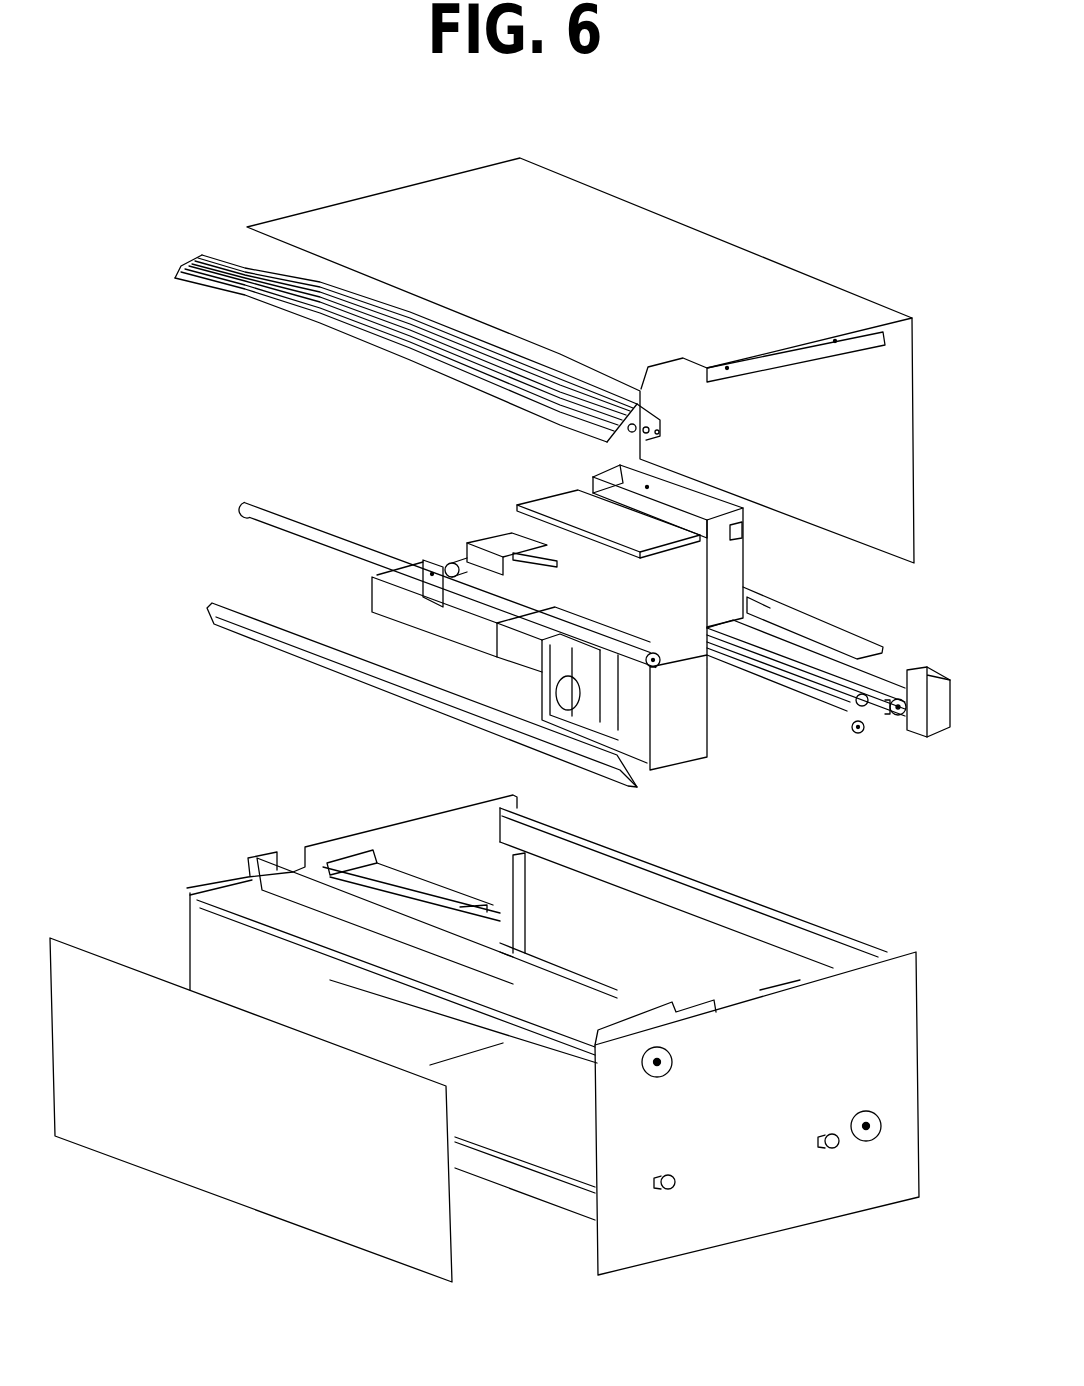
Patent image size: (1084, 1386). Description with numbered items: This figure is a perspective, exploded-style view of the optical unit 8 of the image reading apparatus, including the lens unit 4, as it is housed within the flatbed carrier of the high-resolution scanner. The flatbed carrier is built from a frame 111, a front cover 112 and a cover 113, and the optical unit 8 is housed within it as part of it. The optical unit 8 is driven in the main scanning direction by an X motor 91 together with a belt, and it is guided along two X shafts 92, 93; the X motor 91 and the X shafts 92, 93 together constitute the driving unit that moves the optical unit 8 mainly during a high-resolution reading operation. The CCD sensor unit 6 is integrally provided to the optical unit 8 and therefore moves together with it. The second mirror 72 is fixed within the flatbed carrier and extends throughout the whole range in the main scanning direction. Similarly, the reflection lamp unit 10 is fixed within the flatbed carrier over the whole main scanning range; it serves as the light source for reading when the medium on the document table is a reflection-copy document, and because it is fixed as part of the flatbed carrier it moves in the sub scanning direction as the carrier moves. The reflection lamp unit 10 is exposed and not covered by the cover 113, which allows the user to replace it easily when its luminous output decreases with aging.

The lens unit 4 is at (677, 767).
The CCD sensor unit 6 is at (553, 488).
The optical unit 8 is at (462, 553).
The reflection lamp unit 10 is at (222, 252).
The second mirror 72 is at (213, 623).
The X motor 91 is at (935, 735).
The X shaft 92 is at (246, 506).
The X shaft 93 is at (807, 720).
The frame 111 is at (753, 1238).
The front cover 112 is at (203, 1193).
The cover 113 is at (355, 218).